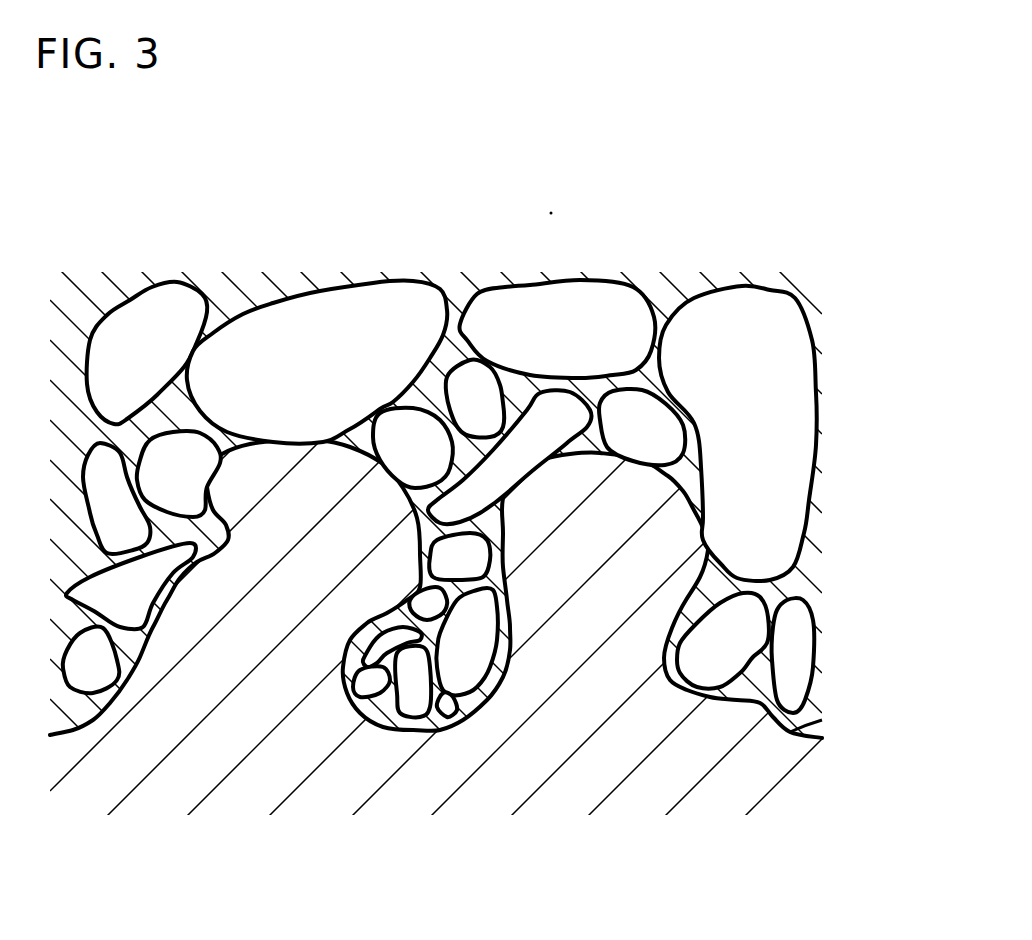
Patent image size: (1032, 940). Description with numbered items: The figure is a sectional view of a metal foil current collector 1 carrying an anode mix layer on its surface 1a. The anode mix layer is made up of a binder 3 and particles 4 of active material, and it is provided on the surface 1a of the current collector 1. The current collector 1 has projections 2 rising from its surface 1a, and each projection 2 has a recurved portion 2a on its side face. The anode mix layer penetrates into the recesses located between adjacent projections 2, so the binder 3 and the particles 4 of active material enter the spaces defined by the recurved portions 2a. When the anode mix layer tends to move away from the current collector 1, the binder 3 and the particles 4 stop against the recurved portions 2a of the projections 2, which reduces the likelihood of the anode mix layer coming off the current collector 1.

The current collector 1 is at (600, 775).
The surface of the current collector 1a is at (797, 730).
The projection 2 is at (300, 463).
The recurved portion 2a is at (367, 623).
The binder 3 is at (733, 550).
The particle of active material 4 is at (763, 597).